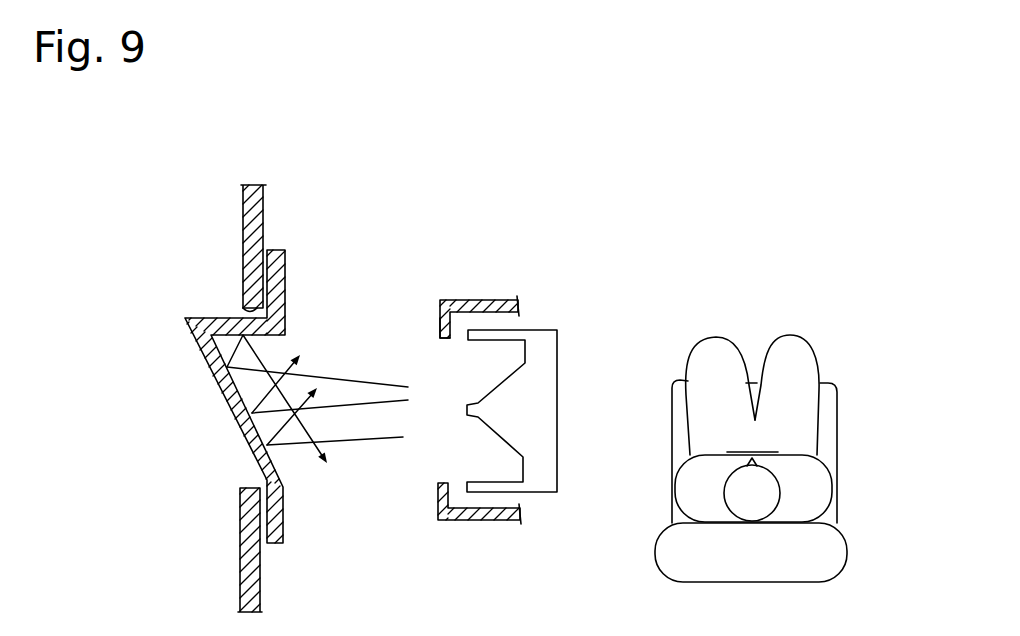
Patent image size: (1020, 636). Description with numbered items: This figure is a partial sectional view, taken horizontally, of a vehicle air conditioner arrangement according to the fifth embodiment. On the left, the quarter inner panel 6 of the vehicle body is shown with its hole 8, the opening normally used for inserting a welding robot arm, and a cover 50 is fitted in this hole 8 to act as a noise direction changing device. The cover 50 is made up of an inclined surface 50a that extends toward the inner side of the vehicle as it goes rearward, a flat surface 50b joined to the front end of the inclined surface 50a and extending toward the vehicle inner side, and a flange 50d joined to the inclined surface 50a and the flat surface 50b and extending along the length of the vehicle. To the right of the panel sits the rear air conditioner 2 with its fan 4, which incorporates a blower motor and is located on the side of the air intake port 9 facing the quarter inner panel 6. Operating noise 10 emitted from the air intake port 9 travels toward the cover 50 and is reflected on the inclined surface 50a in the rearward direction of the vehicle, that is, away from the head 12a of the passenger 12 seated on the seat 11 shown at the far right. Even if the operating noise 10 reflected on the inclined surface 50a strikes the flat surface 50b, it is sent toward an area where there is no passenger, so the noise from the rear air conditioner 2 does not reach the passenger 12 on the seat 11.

The rear air conditioner 2 is at (494, 290).
The fan 4 is at (550, 370).
The quarter inner panel 6 is at (248, 212).
The hole 8 is at (245, 312).
The air intake port 9 is at (437, 337).
The operating noise 10 is at (406, 387).
The seat 11 is at (843, 464).
The passenger 12 is at (800, 420).
The head 12a is at (768, 493).
The cover 50 is at (217, 375).
The inclined surface 50a is at (237, 407).
The flat surface 50b is at (220, 325).
The flange 50d is at (282, 268).